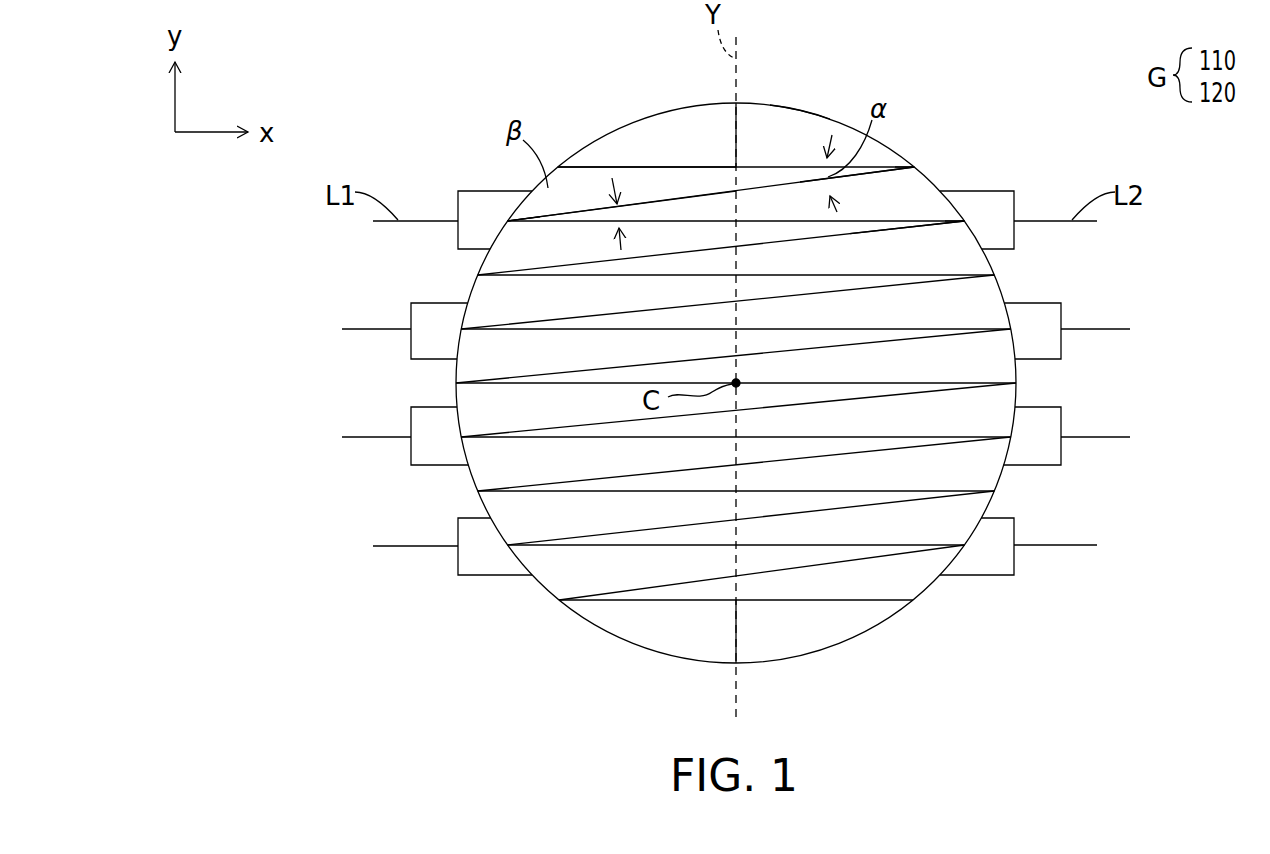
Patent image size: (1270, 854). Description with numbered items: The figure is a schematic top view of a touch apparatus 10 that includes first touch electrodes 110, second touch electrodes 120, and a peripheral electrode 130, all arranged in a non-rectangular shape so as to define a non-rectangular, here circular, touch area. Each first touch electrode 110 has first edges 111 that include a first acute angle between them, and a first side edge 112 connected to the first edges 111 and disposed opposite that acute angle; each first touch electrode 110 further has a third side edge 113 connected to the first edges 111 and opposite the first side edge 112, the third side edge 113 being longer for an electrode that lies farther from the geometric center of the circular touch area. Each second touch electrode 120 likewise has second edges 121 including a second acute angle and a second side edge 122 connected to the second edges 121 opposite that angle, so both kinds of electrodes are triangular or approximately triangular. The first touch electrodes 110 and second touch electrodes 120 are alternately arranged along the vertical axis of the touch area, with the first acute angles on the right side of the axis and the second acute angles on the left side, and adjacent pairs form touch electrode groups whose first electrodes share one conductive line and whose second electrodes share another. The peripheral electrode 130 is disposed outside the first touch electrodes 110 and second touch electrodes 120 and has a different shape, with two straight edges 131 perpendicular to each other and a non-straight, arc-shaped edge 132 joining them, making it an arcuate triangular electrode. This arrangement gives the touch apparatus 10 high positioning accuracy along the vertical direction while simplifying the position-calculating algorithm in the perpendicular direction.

The touch apparatus 10 is at (1122, 718).
The first touch electrode 110 is at (550, 190).
The first edges 111 is at (676, 200).
The first side edge 112 is at (517, 209).
The third side edge 113 is at (923, 167).
The second touch electrode 120 is at (887, 222).
The second edges 121 is at (877, 176).
The second side edge 122 is at (950, 195).
The peripheral electrode 130 is at (672, 125).
The straight edges 131 is at (797, 172).
The non-straight edge 132 is at (798, 105).